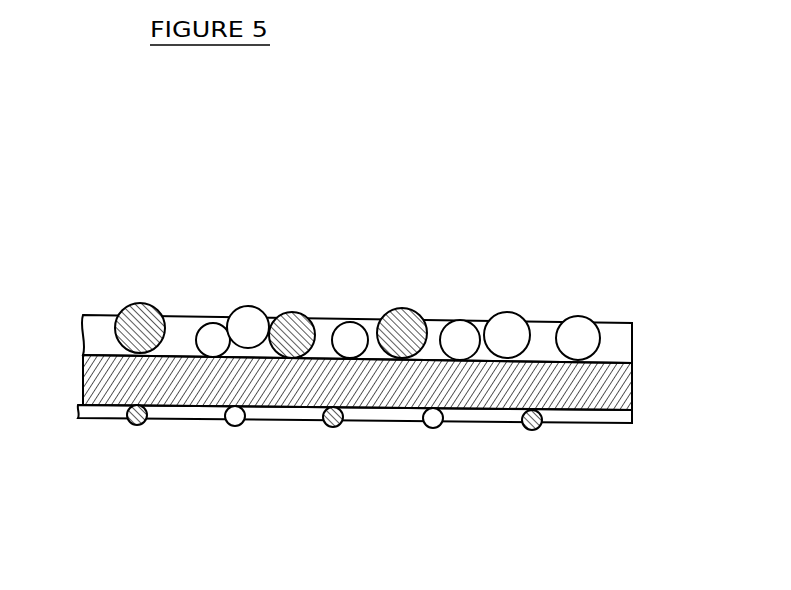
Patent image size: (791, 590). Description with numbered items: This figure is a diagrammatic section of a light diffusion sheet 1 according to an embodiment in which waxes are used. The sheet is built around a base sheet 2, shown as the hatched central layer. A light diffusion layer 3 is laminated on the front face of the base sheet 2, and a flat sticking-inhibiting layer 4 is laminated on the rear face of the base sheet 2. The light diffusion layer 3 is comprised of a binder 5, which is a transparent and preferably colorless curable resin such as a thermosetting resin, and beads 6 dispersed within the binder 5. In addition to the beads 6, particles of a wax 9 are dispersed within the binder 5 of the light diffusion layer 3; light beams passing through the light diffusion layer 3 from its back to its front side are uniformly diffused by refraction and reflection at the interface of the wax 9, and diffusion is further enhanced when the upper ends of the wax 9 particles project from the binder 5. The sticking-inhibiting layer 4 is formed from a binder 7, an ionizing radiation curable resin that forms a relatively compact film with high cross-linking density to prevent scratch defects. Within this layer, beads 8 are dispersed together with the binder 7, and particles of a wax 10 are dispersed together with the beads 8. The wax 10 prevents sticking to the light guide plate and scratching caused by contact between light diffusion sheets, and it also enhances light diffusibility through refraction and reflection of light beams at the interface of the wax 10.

The light diffusion sheet 1 is at (387, 190).
The base sheet 2 is at (632, 390).
The light diffusion layer 3 is at (400, 282).
The sticking-inhibiting layer 4 is at (398, 464).
The binder 5 is at (183, 318).
The beads 6 is at (248, 317).
The binder 7 is at (362, 427).
The beads 8 is at (235, 426).
The wax 9 is at (401, 312).
The wax 10 is at (137, 426).